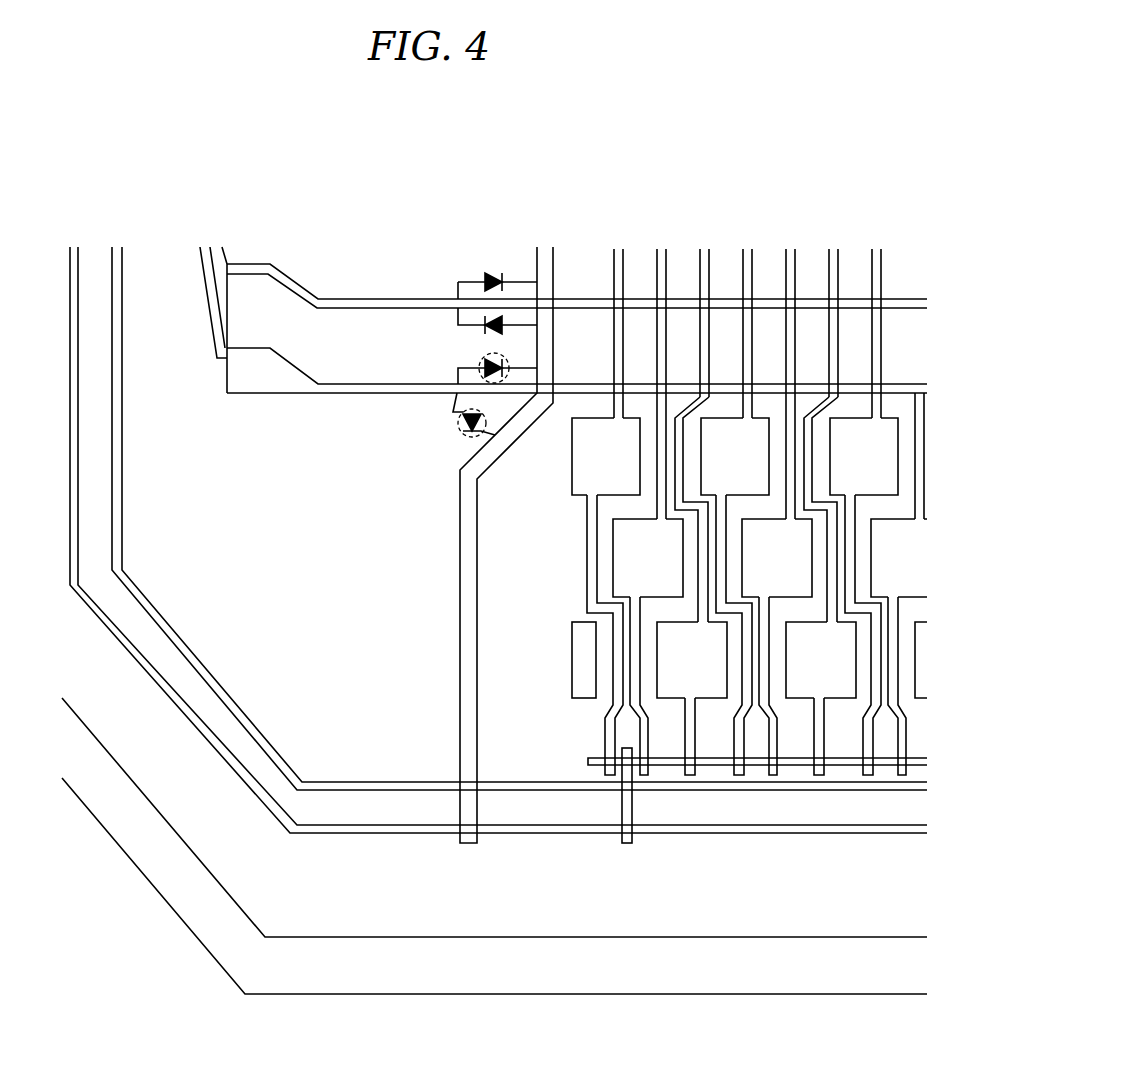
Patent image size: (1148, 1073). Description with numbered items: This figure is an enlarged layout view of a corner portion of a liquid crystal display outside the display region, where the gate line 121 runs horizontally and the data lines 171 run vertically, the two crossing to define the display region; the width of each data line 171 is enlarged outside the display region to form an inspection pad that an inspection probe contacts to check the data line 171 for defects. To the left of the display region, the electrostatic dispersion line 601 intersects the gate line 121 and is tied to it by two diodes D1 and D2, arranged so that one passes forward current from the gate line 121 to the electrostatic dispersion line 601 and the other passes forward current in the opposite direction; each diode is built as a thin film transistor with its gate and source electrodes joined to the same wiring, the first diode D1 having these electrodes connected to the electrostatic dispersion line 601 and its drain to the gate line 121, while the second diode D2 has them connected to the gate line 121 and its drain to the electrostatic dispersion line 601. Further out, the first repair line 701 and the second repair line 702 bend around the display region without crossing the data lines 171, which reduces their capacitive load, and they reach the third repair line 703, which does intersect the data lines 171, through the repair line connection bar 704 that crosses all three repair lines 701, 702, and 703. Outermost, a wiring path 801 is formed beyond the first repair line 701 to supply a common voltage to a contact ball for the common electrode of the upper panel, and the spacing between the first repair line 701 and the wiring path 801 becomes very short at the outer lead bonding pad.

The gate line 121 is at (638, 384).
The data line 171 is at (668, 347).
The first diode D1 is at (458, 427).
The second diode D2 is at (502, 378).
The electrostatic dispersion line 601 is at (459, 681).
The first repair line 701 is at (210, 742).
The second repair line 702 is at (263, 752).
The third repair line 703 is at (796, 768).
The repair line connection bar 704 is at (620, 810).
The wiring path 801 is at (722, 937).